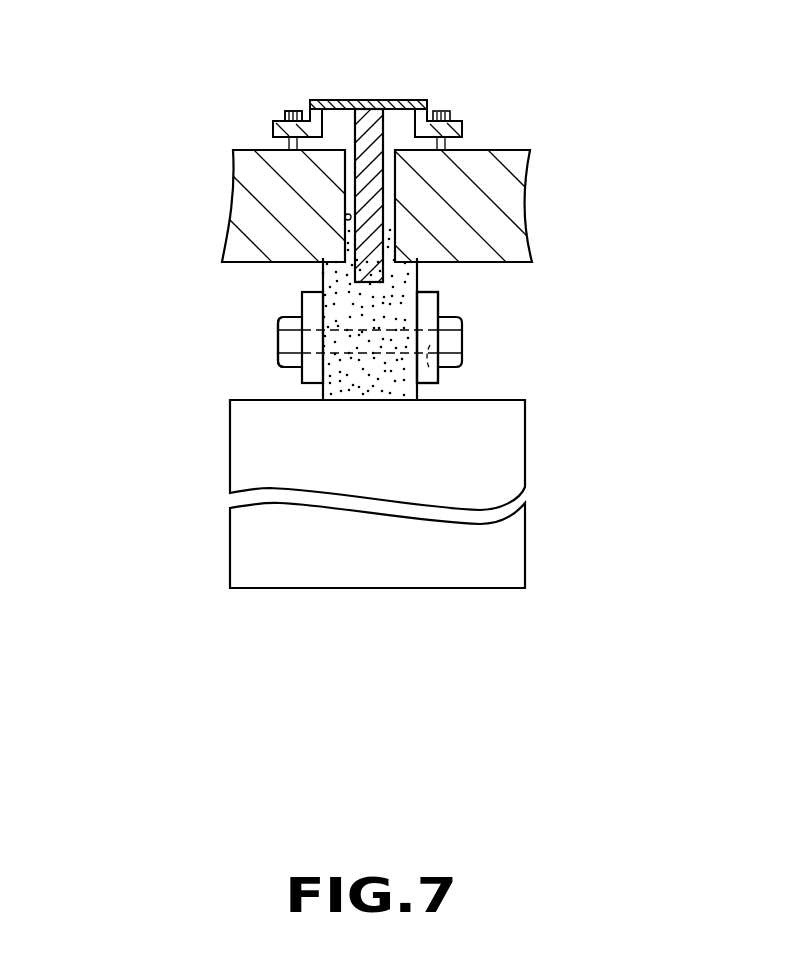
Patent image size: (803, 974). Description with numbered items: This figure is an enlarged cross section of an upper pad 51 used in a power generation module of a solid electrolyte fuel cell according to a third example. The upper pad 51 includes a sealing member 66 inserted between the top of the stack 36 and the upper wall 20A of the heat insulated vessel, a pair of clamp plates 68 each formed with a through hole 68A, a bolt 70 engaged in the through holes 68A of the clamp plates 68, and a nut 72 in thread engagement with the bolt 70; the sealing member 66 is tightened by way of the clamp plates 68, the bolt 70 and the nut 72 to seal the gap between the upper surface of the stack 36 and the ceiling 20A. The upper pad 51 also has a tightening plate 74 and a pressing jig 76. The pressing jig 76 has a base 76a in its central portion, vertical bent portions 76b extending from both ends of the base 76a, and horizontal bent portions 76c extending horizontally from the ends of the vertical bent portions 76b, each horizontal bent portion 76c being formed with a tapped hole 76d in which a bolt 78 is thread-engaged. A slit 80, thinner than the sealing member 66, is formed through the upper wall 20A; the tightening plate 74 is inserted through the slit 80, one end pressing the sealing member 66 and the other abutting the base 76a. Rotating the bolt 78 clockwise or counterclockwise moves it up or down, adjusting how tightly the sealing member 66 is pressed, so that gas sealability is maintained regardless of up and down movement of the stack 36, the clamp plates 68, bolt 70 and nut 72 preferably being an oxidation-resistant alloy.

The upper pad 51 is at (197, 310).
The upper wall 20A is at (518, 197).
The stack 36 is at (245, 440).
The sealing member 66 is at (403, 275).
The clamp plates 68 is at (423, 305).
The through hole 68A is at (438, 375).
The bolt 70 is at (350, 345).
The nut 72 is at (450, 340).
The tightening plate 74 is at (398, 140).
The pressing jig 76 is at (400, 100).
The base 76a is at (350, 100).
The vertical bent portions 76b is at (312, 118).
The horizontal bent portions 76c is at (273, 133).
The tapped hole 76d is at (460, 133).
The bolt 78 is at (283, 115).
The slit 80 is at (345, 215).